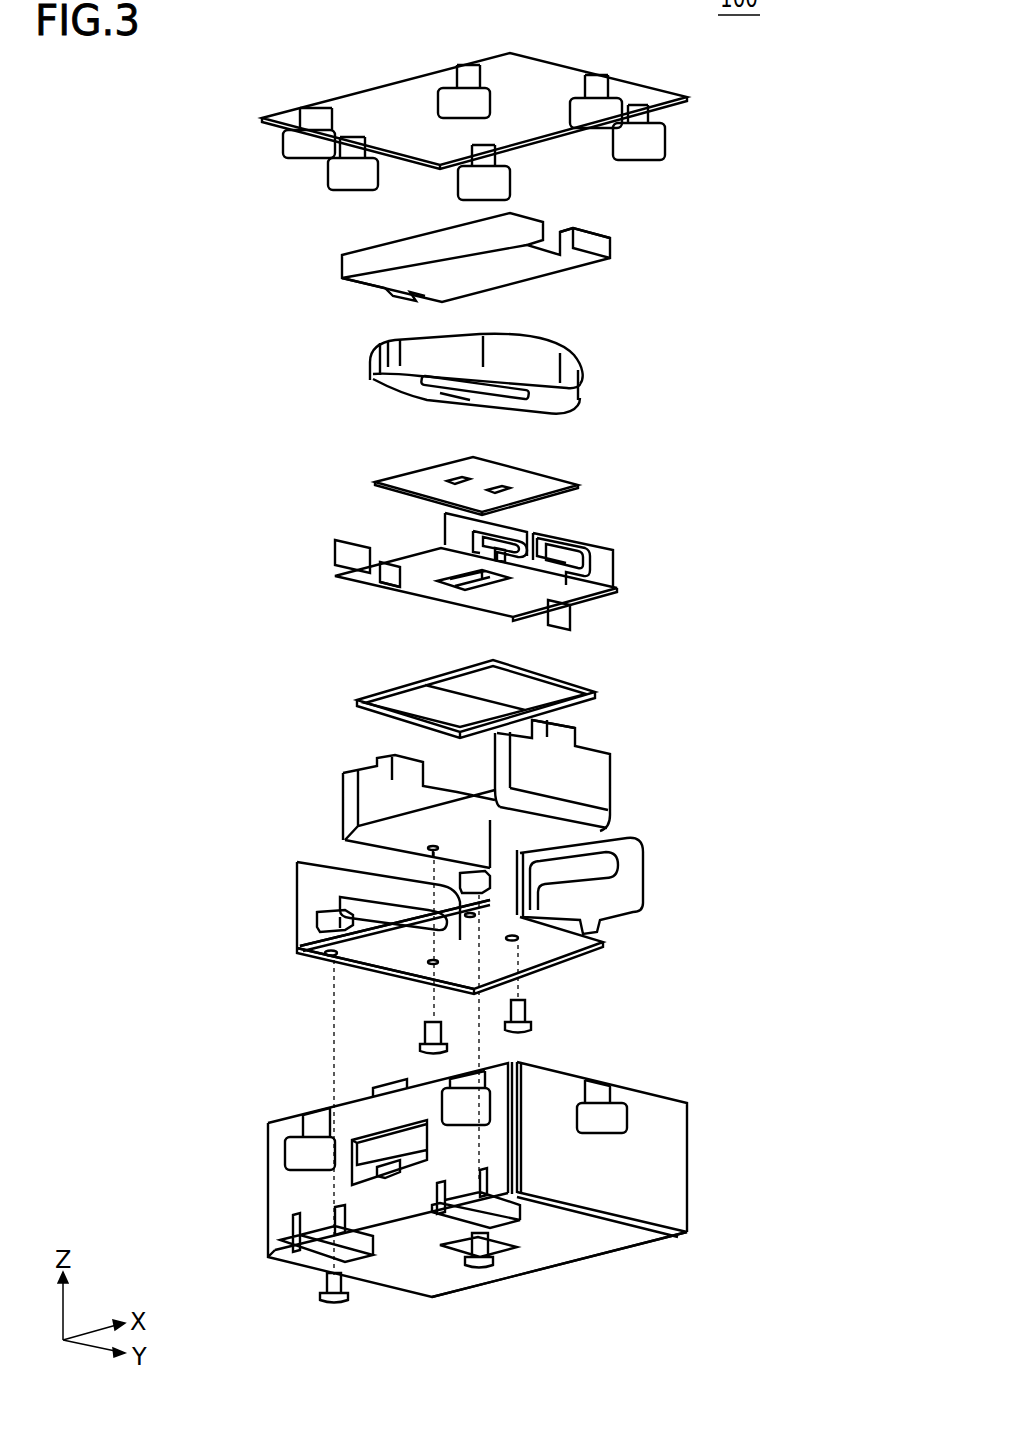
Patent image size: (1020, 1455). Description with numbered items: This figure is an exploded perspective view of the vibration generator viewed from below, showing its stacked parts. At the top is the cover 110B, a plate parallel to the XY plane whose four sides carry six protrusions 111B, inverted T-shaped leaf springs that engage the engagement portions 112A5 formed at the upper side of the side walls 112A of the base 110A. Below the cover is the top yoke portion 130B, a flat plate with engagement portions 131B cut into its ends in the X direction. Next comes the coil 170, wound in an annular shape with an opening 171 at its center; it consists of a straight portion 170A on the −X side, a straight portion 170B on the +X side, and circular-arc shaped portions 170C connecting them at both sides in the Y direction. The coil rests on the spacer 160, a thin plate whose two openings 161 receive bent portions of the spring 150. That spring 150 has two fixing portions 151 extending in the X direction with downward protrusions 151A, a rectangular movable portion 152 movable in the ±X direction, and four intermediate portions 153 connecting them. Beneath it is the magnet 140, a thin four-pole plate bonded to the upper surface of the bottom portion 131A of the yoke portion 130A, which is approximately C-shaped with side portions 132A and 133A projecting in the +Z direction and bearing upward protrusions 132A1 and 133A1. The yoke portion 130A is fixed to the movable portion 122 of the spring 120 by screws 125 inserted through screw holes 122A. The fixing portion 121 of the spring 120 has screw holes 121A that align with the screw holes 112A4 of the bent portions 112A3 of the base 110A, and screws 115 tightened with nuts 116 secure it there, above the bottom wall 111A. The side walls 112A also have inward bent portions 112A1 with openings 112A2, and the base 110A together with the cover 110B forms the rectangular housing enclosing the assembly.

The cover 110B is at (650, 83).
The protrusions 111B is at (295, 146).
The engagement portions 131B is at (565, 233).
The top yoke portion 130B is at (551, 239).
The coil 170 is at (474, 367).
The straight portion 170A is at (475, 403).
The straight portion 170B is at (525, 360).
The circular-arc shaped portions 170C is at (390, 355).
The opening 171 is at (472, 393).
The spacer 160 is at (482, 478).
The openings 161 is at (450, 487).
The spring 150 is at (474, 576).
The fixing portions 151 is at (365, 577).
The protrusions 151A is at (380, 587).
The movable portion 152 is at (550, 586).
The intermediate portions 153 is at (350, 558).
The magnet 140 is at (590, 675).
The yoke portion 130A is at (502, 778).
The bottom portion 131A is at (417, 820).
The side portion 132A is at (363, 778).
The protrusion 132A1 is at (387, 768).
The side portion 133A is at (615, 759).
The protrusion 133A1 is at (563, 735).
The spring 120 is at (466, 933).
The fixing portion 121 is at (397, 940).
The screw holes 121A is at (333, 958).
The movable portion 122 is at (462, 960).
The screw holes 122A is at (528, 945).
The nuts 116 is at (323, 917).
The screws 125 is at (525, 1013).
The screws 115 is at (334, 1305).
The base 110A is at (496, 1203).
The bottom wall 111A is at (572, 1245).
The side walls 112A is at (470, 1124).
The bent portions 112A1 is at (367, 1173).
The openings 112A2 is at (387, 1178).
The bent portions 112A3 is at (320, 1233).
The screw holes 112A4 is at (338, 1233).
The engagement portions 112A5 is at (598, 1093).